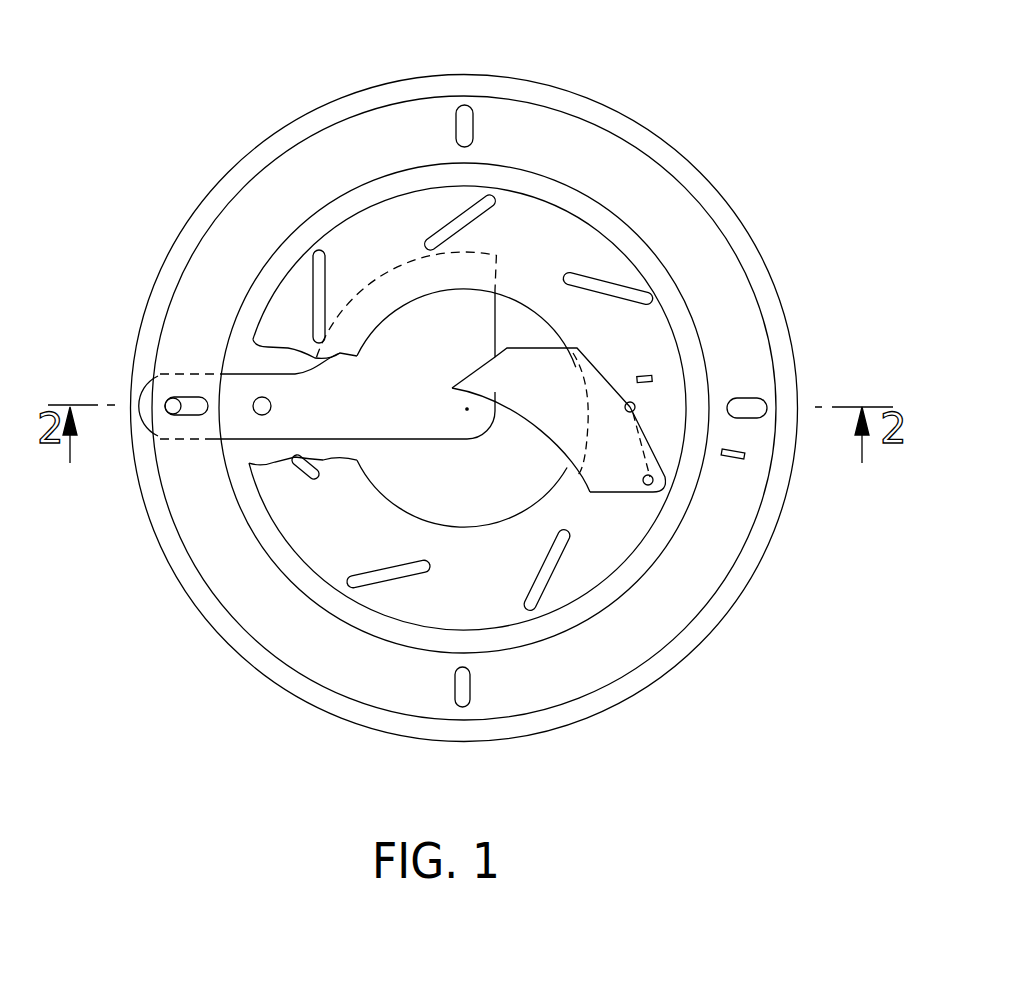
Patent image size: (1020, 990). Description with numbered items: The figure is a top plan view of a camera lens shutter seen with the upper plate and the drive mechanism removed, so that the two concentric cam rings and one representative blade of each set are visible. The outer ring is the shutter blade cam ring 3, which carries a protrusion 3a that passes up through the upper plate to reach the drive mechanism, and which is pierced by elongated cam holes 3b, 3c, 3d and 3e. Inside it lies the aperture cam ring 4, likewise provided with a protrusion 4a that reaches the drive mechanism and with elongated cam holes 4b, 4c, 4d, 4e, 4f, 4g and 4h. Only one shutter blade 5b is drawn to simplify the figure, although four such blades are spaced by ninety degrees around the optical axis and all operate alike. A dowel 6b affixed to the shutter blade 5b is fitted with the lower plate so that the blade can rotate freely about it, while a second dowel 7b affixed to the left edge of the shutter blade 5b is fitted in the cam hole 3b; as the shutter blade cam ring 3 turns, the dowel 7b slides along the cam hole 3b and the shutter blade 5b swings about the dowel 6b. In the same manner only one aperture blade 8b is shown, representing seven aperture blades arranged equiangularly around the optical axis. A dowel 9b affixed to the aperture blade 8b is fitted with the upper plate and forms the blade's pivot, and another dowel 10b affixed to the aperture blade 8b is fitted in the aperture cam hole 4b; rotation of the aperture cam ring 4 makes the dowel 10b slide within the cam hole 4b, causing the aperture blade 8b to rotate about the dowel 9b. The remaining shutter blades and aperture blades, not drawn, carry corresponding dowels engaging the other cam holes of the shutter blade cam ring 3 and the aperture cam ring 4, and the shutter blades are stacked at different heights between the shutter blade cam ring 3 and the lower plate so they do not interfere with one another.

The shutter blade cam ring 3 is at (553, 128).
The protrusion 3a is at (740, 458).
The cam hole 3b is at (260, 398).
The cam hole 3c is at (470, 697).
The cam hole 3d is at (757, 397).
The cam hole 3e is at (466, 103).
The aperture cam ring 4 is at (545, 233).
The protrusion 4a is at (643, 377).
The cam hole 4b is at (660, 462).
The cam hole 4c is at (610, 280).
The cam hole 4d is at (487, 196).
The cam hole 4e is at (326, 262).
The cam hole 4f is at (297, 462).
The cam hole 4g is at (383, 583).
The cam hole 4h is at (547, 580).
The shutter blade 5b is at (294, 385).
The dowel 6b is at (183, 397).
The dowel 7b is at (172, 400).
The aperture blade 8b is at (567, 420).
The dowel 9b is at (650, 485).
The dowel 10b is at (637, 403).